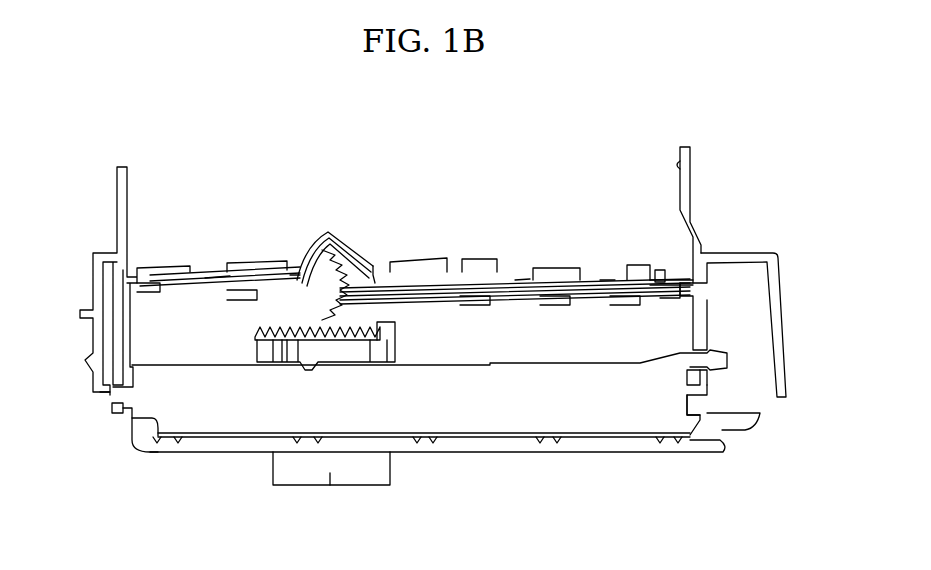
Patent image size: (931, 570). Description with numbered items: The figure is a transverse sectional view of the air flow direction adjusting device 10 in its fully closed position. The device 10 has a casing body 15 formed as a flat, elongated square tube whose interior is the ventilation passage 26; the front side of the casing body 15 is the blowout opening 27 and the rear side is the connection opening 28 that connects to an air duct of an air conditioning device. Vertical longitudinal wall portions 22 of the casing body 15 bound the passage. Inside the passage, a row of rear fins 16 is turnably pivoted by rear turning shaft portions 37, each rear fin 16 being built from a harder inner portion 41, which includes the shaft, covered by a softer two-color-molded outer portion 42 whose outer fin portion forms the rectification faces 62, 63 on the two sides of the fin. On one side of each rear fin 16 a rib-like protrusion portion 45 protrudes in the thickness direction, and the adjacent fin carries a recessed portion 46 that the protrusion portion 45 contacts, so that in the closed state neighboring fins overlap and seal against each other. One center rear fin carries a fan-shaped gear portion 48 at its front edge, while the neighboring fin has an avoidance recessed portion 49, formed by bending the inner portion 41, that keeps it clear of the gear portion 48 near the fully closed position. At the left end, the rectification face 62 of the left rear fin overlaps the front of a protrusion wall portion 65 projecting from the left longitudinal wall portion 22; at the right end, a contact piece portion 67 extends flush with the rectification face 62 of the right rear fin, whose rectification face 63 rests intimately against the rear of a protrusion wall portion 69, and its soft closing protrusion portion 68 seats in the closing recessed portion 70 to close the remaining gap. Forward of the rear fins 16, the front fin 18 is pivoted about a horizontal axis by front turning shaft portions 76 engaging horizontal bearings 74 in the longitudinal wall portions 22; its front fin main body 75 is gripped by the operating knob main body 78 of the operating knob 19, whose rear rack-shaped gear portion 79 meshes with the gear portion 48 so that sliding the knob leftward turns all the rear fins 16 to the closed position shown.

The air flow direction adjusting device 10 is at (487, 152).
The casing body 15 is at (690, 180).
The rear fins 16 is at (163, 290).
The front fin 18 is at (253, 423).
The operating knob 19 is at (305, 485).
The longitudinal wall portions 22 is at (117, 415).
The ventilation passage 26 is at (683, 163).
The blowout opening 27 is at (690, 437).
The connection opening 28 is at (681, 147).
The rear turning shaft portion 37 is at (215, 280).
The inner portion 41 is at (175, 282).
The outer portion 42 is at (190, 290).
The protrusion portion 45 is at (282, 282).
The recessed portion 46 is at (277, 285).
The gear portion 48 is at (327, 250).
The avoidance recessed portion 49 is at (322, 242).
The rectification face 62 is at (240, 266).
The rectification face 63 is at (150, 293).
The protrusion wall portion 65 is at (147, 268).
The contact piece portion 67 is at (682, 280).
The closing protrusion portion 68 is at (660, 272).
The protrusion wall portion 69 is at (702, 268).
The closing recessed portion 70 is at (632, 300).
The horizontal bearings 74 is at (112, 397).
The front fin main body 75 is at (362, 427).
The front turning shaft portion 76 is at (108, 392).
The operating knob main body 78 is at (334, 473).
The gear portion 79 is at (257, 332).